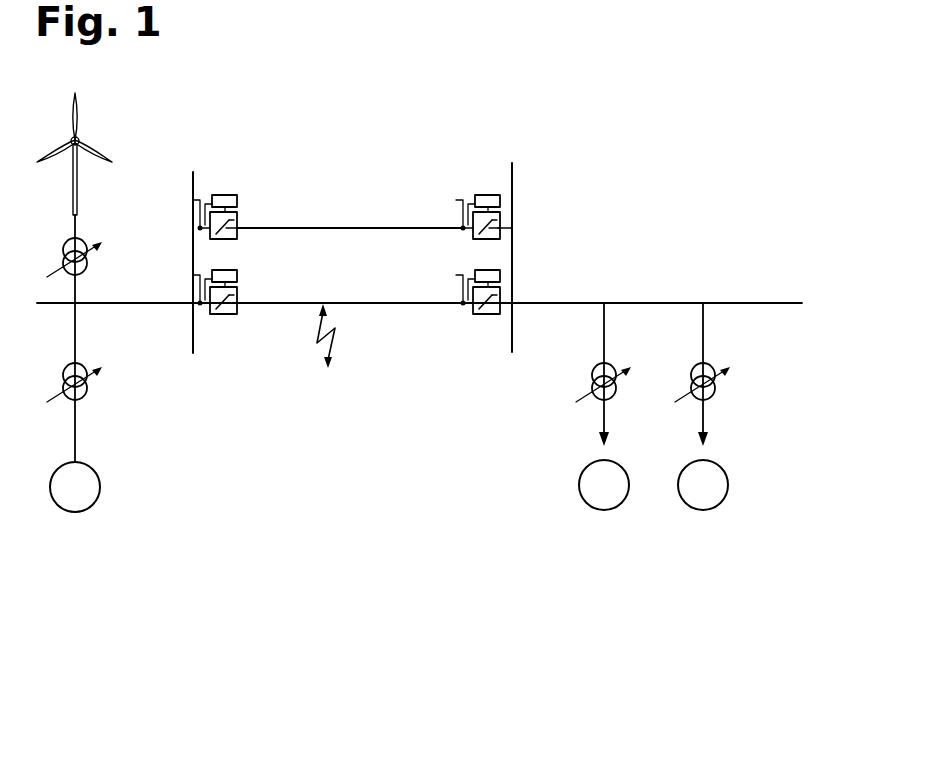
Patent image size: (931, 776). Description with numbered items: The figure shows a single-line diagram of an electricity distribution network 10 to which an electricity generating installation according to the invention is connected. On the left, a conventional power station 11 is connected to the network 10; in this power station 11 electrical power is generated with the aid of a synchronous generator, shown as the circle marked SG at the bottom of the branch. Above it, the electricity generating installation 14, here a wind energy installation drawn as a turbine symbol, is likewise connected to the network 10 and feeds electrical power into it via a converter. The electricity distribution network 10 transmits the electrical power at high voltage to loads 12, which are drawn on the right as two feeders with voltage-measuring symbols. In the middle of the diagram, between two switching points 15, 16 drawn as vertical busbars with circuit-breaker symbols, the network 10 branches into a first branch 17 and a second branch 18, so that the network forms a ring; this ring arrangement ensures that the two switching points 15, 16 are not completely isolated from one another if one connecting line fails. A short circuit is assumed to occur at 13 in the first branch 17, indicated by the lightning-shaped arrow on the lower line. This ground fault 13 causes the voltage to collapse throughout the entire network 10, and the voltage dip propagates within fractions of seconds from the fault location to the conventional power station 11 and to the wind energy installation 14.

The electricity distribution network 10 is at (618, 240).
The conventional power station 11 is at (88, 464).
The loads 12 is at (603, 510).
The short circuit 13 is at (313, 333).
The electricity generating installation 14 is at (79, 188).
The first switching point 15 is at (193, 172).
The second switching point 16 is at (512, 163).
The first branch 17 is at (432, 305).
The second branch 18 is at (357, 228).